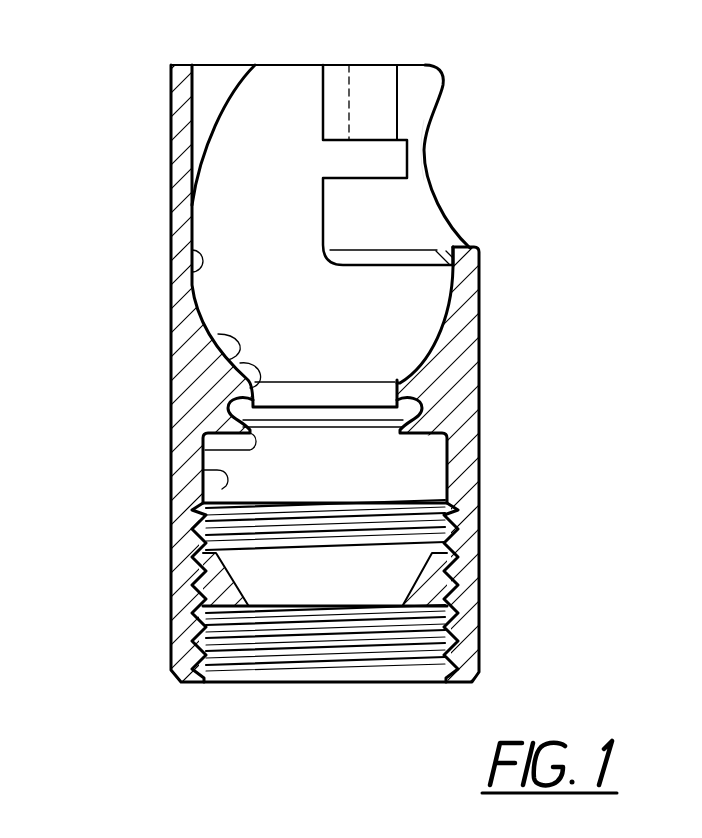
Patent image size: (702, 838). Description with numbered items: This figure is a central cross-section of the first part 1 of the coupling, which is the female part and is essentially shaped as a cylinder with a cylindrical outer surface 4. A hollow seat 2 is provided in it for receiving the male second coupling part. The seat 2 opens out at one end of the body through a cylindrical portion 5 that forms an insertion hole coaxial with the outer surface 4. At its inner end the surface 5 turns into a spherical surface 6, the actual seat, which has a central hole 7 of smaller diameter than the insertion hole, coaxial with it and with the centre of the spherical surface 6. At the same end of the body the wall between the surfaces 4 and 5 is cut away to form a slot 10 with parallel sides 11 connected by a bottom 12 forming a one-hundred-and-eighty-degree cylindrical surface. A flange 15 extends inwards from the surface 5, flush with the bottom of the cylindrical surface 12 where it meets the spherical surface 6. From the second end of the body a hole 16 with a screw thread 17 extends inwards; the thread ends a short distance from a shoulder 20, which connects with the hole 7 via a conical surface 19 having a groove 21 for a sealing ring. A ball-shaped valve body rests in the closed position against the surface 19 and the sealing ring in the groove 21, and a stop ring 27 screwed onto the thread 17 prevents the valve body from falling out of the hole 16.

The first part 1 is at (180, 48).
The hollow seat 2 is at (210, 240).
The cylindrical outer surface 4 is at (170, 118).
The cylindrical portion 5 is at (192, 268).
The spherical surface 6 is at (218, 334).
The central hole 7 is at (245, 368).
The slot 10 is at (418, 95).
The parallel sides 11 is at (412, 110).
The bottom 12 is at (474, 246).
The flange 15 is at (426, 247).
The hole 16 is at (212, 490).
The screw thread 17 is at (200, 632).
The conical surface 19 is at (203, 441).
The shoulder 20 is at (203, 442).
The groove 21 is at (448, 434).
The stop ring 27 is at (432, 587).